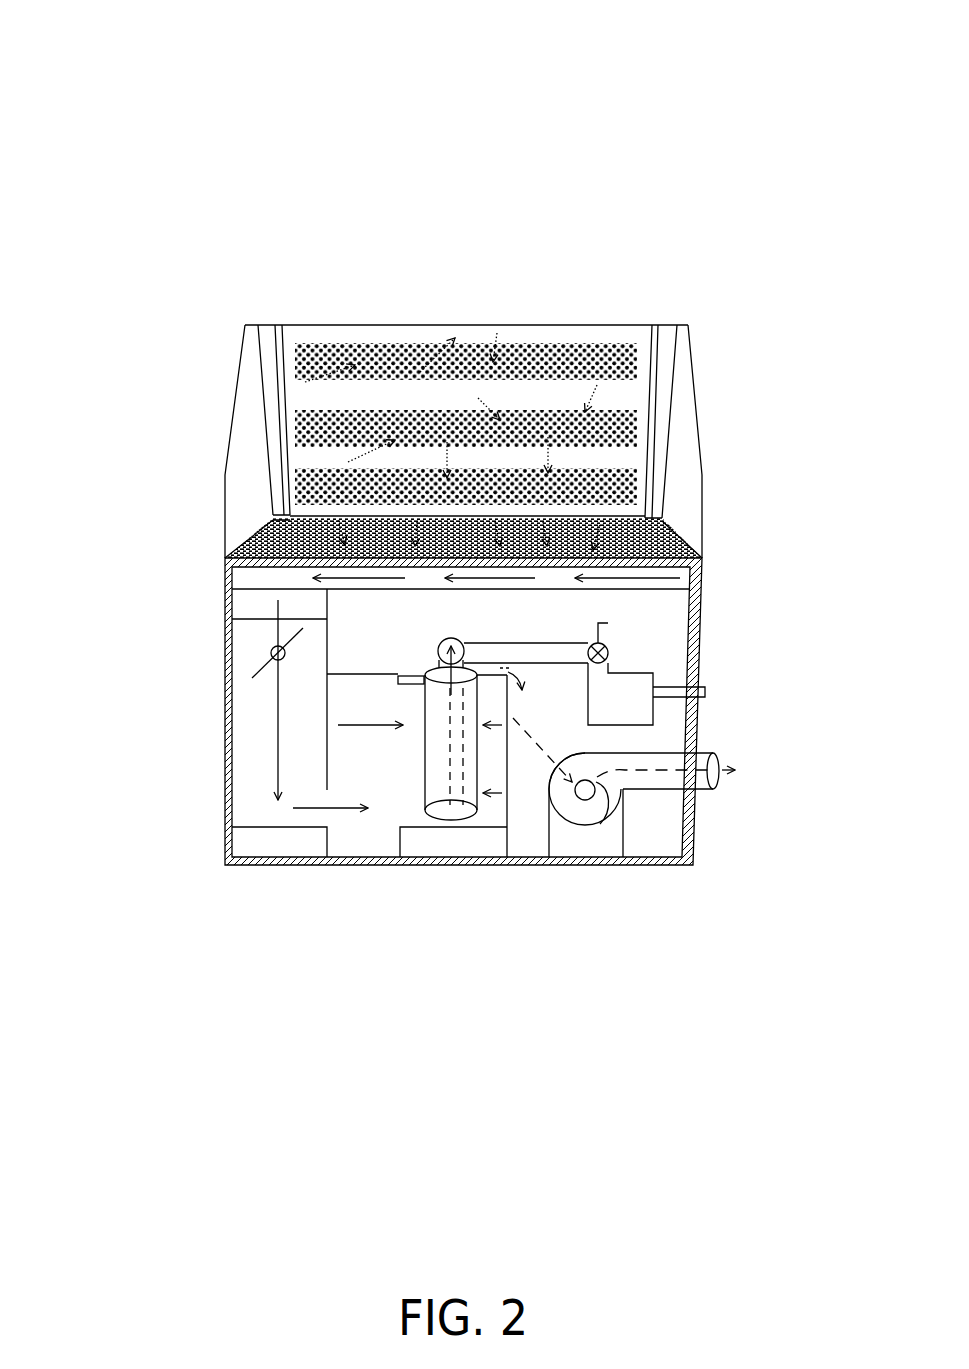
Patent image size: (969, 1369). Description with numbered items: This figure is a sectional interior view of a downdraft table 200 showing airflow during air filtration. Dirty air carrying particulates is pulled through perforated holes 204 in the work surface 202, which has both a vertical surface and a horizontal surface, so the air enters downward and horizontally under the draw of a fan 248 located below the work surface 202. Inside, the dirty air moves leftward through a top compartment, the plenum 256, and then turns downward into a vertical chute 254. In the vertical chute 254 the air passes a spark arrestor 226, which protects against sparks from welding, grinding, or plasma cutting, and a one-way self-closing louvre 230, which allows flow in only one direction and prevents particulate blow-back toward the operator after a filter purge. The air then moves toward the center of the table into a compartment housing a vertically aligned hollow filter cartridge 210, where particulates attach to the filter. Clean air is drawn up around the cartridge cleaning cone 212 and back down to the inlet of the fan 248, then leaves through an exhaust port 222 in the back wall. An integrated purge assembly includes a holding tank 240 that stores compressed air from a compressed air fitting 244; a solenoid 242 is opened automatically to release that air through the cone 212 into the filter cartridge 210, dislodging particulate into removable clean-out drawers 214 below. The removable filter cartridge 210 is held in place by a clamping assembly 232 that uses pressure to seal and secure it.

The downdraft table 200 is at (138, 52).
The work surface 202 is at (637, 483).
The perforated holes 204 is at (300, 372).
The plenum 256 is at (680, 581).
The spark arrestor 226 is at (252, 606).
The one-way self-closing louvre 230 is at (270, 652).
The vertical chute 254 is at (244, 740).
The removable clean-out drawers 214 is at (267, 840).
The cartridge cleaning cone 212 is at (422, 694).
The hollow filter cartridge 210 is at (435, 741).
The clamping assembly 232 is at (532, 702).
The solenoid 242 is at (606, 645).
The holding tank 240 is at (655, 715).
The compressed air fitting 244 is at (707, 690).
The fan 248 is at (623, 827).
The exhaust port 222 is at (725, 778).